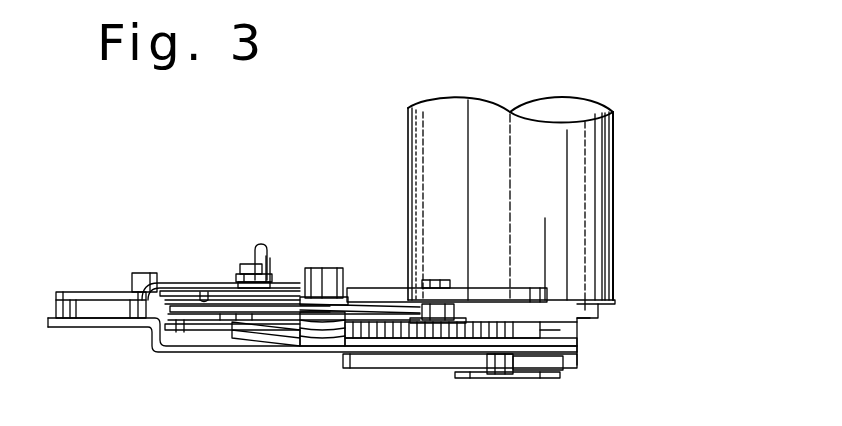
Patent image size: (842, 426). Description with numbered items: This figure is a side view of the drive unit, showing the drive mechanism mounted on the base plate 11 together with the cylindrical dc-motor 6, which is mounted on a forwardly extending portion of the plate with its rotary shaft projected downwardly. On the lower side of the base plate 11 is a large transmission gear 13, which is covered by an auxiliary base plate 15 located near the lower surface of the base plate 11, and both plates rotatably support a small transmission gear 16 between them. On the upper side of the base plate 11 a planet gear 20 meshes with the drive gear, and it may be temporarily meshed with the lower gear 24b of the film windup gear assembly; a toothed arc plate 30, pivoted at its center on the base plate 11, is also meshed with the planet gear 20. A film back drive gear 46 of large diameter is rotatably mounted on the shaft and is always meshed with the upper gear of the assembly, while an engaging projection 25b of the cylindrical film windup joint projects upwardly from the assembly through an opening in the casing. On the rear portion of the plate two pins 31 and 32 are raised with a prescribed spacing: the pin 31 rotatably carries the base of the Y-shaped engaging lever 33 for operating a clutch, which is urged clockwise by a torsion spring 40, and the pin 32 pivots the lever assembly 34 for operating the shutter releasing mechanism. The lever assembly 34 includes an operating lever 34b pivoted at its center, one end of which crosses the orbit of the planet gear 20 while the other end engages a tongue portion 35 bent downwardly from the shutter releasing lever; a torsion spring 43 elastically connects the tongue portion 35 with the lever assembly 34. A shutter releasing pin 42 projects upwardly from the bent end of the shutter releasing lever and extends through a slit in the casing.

The dc-motor 6 is at (606, 222).
The base plate 11 is at (199, 352).
The large transmission gear 13 is at (372, 360).
The auxiliary base plate 15 is at (474, 370).
The small transmission gear 16 is at (555, 366).
The planet gear 20 is at (427, 333).
The lower gear 24b is at (228, 332).
The engaging projection 25b is at (243, 265).
The toothed arc plate 30 is at (583, 350).
The pin 31 is at (334, 268).
The pin 32 is at (276, 340).
The engaging lever 33 is at (367, 303).
The lever assembly 34 is at (174, 290).
The operating lever 34b is at (180, 324).
The tongue portion 35 is at (130, 290).
The torsion spring 40 is at (320, 345).
The pin 42 is at (280, 256).
The torsion spring 43 is at (205, 297).
The film back drive gear 46 is at (482, 290).